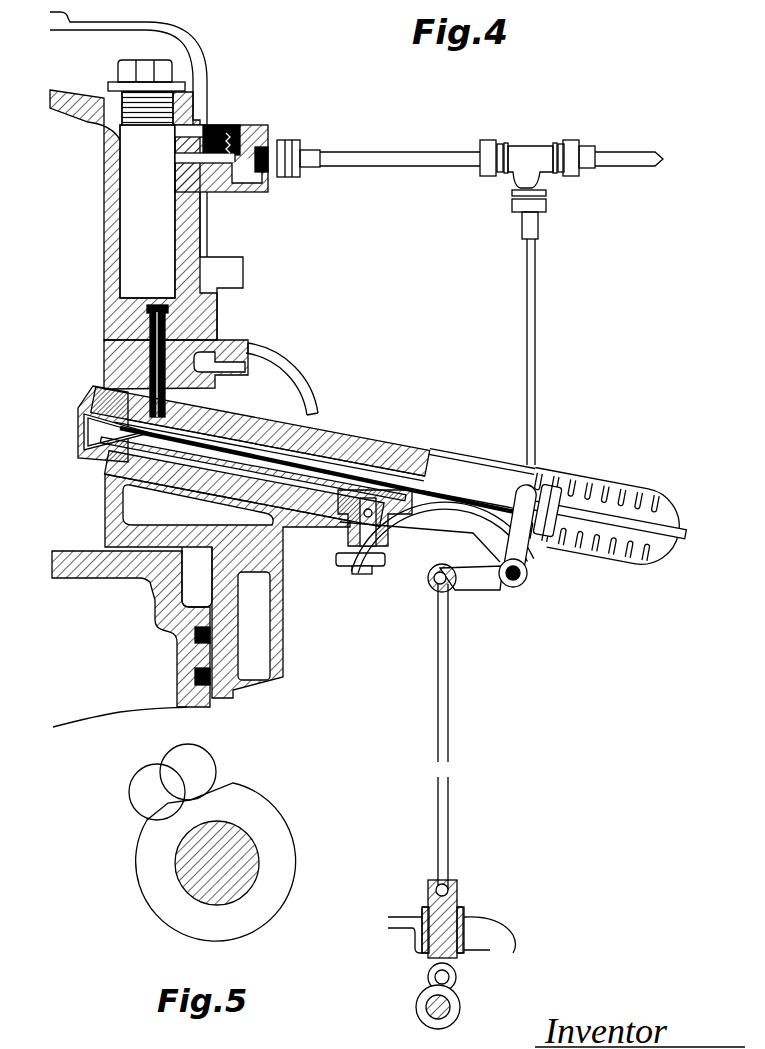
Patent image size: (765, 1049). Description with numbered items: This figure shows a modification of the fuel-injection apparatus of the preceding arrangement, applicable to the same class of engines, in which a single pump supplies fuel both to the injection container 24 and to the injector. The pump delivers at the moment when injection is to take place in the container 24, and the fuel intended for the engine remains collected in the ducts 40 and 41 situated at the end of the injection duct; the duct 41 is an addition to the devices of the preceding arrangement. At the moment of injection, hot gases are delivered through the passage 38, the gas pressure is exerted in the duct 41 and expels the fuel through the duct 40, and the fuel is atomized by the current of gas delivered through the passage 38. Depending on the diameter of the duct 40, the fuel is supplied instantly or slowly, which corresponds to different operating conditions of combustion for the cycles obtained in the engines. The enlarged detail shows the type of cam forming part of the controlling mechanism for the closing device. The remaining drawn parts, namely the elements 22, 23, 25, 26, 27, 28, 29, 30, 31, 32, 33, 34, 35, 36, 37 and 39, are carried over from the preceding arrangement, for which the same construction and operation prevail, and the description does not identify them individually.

In FIG. 4, the housing body 22 is at (76, 497).
In FIG. 4, the casing wall 23 is at (77, 105).
In FIG. 4, the injection container 24 is at (148, 192).
In FIG. 4, the plate 25 is at (77, 580).
In FIG. 4, the valve block 26 is at (207, 160).
In FIG. 4, the pipe union nut 27 is at (270, 133).
In FIG. 4, the fuel pipe 28 is at (630, 160).
In FIG. 4, the nozzle housing 29 is at (305, 408).
In FIG. 4, the sleeve tube 30 is at (333, 460).
In FIG. 4, the lever 31 is at (480, 580).
In FIG. 4, the rod 32 is at (440, 722).
In FIG. 4, the rod end fitting 33 is at (463, 934).
In FIG. 5, the rod end fitting 33 is at (193, 764).
In FIG. 4, the eye lug 34 is at (458, 1002).
In FIG. 5, the eye lug 34 is at (165, 902).
In FIG. 4, the spring housing 35 is at (597, 505).
In FIG. 4, the arched bracket 36 is at (218, 390).
In FIG. 4, the flange lug 37 is at (217, 320).
In FIG. 4, the hot gas passage 38 is at (85, 398).
In FIG. 4, the needle rod 39 is at (400, 483).
In FIG. 4, the duct 40 is at (78, 420).
In FIG. 4, the duct 41 is at (182, 522).